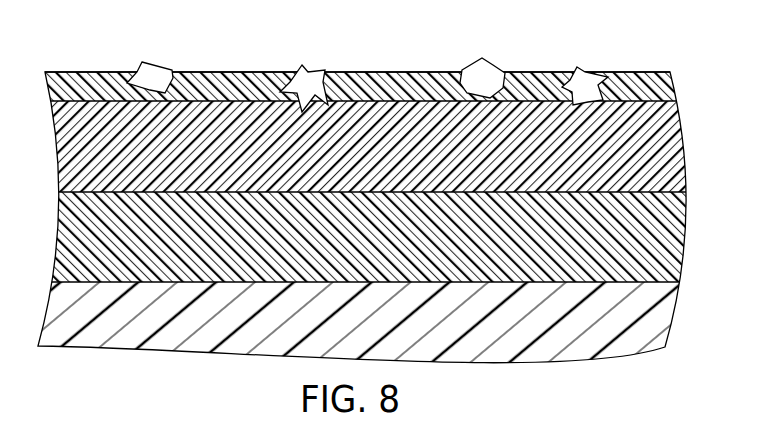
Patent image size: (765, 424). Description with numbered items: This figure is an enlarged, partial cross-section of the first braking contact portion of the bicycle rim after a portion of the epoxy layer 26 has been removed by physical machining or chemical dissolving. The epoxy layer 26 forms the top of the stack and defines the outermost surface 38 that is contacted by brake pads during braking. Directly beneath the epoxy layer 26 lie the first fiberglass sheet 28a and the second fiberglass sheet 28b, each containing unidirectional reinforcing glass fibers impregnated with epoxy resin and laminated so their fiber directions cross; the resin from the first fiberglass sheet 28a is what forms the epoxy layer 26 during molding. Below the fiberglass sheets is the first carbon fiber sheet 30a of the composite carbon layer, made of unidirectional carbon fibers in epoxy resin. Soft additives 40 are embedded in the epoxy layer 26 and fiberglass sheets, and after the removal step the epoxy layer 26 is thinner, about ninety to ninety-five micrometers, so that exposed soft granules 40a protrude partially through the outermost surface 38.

The epoxy layer 26 is at (653, 87).
The first fiberglass sheet 28a is at (375, 146).
The second fiberglass sheet 28b is at (637, 234).
The first carbon fiber sheet 30a is at (643, 318).
The outermost surface 38 is at (78, 72).
The soft additives 40 is at (290, 56).
The exposed soft granules 40a is at (147, 61).